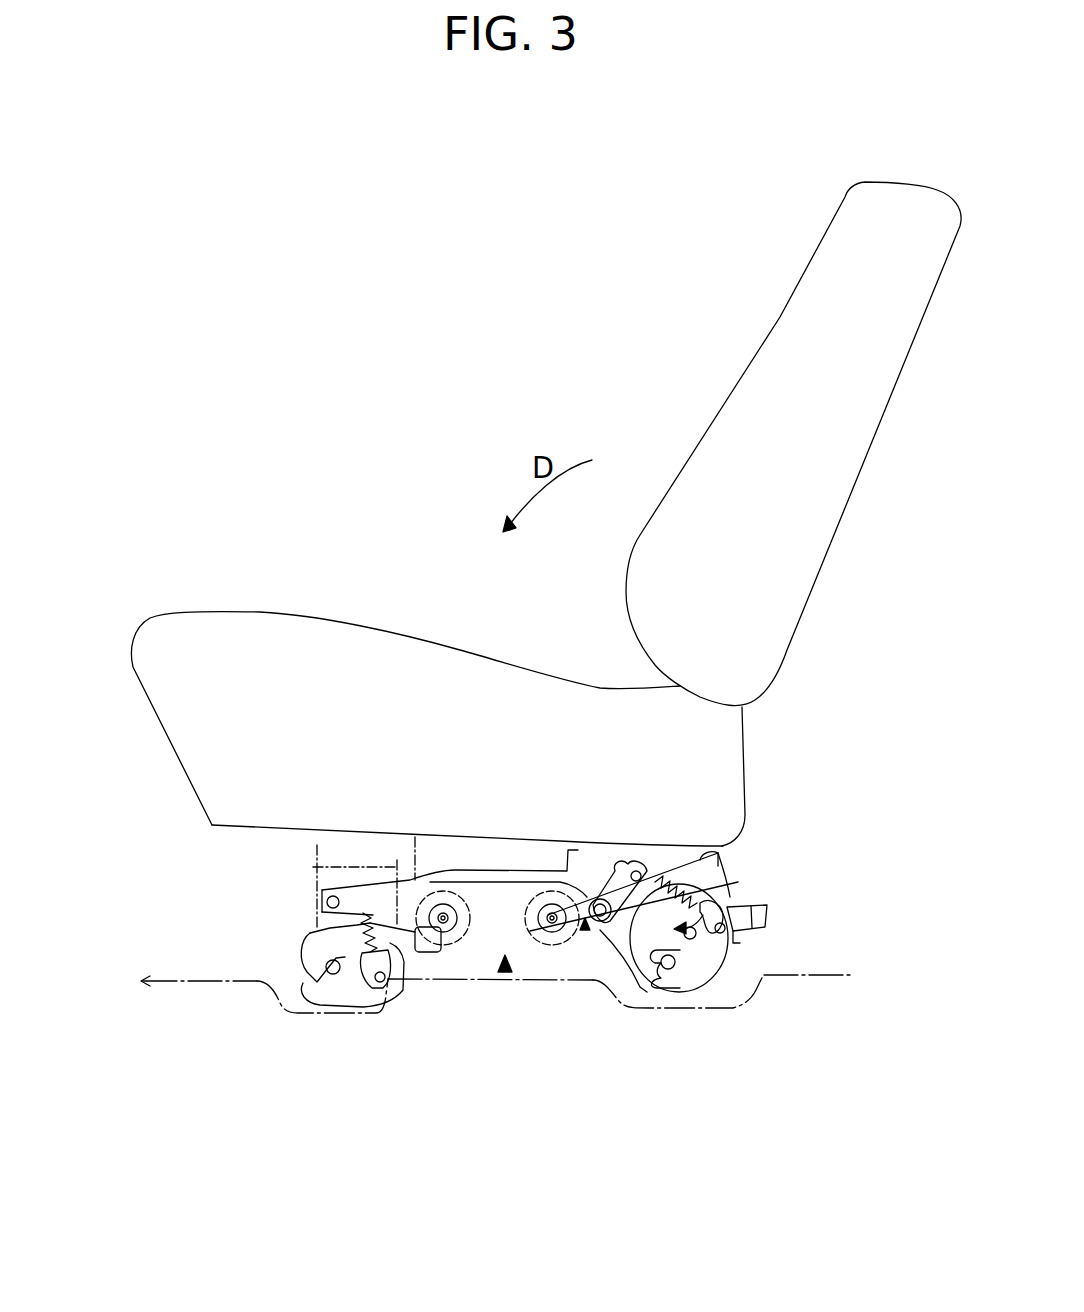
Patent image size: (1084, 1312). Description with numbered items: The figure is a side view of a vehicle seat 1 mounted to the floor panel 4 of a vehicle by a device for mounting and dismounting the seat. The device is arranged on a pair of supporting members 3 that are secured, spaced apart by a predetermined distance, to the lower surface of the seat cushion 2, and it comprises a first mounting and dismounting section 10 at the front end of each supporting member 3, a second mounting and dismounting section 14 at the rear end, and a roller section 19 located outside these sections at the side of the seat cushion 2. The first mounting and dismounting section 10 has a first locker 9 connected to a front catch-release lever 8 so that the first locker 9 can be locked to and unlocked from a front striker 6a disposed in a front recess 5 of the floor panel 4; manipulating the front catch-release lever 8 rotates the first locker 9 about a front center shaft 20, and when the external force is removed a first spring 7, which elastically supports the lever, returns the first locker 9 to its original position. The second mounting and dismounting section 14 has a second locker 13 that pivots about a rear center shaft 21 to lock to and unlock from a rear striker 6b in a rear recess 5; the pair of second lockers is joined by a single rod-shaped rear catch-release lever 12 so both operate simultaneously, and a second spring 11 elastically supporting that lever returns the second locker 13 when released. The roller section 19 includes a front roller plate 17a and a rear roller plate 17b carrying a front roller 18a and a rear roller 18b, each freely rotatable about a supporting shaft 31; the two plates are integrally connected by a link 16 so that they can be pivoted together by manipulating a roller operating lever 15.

The vehicle seat 1 is at (333, 229).
The seat cushion 2 is at (205, 625).
The supporting member 3 is at (325, 860).
The floor panel 4 is at (190, 982).
The recess 5 is at (293, 1007).
The front striker 6a is at (334, 976).
The rear striker 6b is at (669, 970).
The first spring 7 is at (403, 965).
The front catch-release lever 8 is at (430, 955).
The first locker 9 is at (307, 955).
The first mounting and dismounting section 10 is at (295, 932).
The second spring 11 is at (662, 893).
The rear catch-release lever 12 is at (725, 845).
The second locker 13 is at (713, 952).
The second mounting and dismounting section 14 is at (732, 891).
The roller operating lever 15 is at (767, 908).
The link 16 is at (503, 870).
The front roller plate 17a is at (400, 900).
The rear roller plate 17b is at (585, 930).
The front roller 18a is at (453, 940).
The rear roller 18b is at (548, 947).
The roller section 19 is at (503, 972).
The front center shaft 20 is at (374, 980).
The rear center shaft 21 is at (691, 942).
The supporting shaft 31 is at (443, 913).